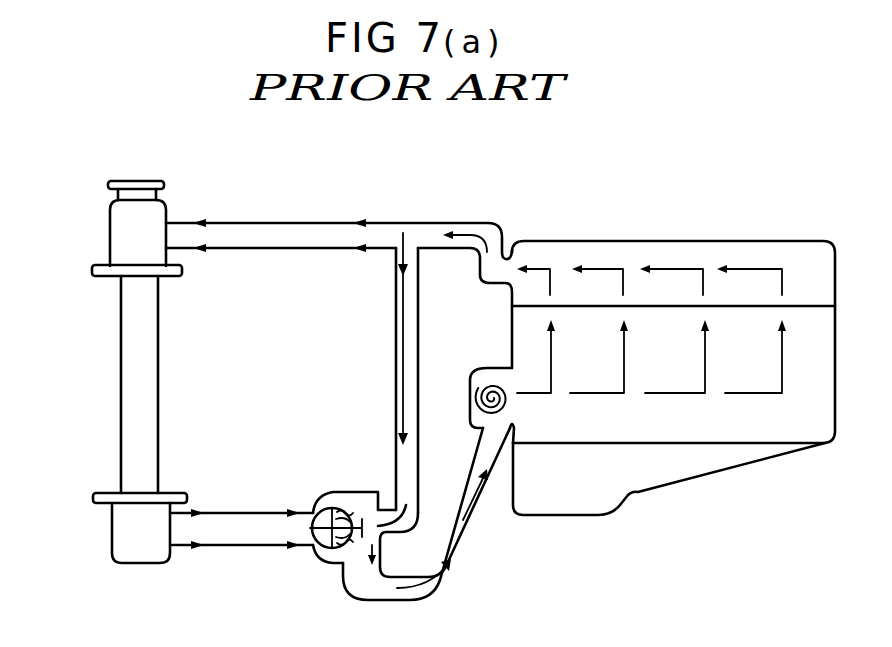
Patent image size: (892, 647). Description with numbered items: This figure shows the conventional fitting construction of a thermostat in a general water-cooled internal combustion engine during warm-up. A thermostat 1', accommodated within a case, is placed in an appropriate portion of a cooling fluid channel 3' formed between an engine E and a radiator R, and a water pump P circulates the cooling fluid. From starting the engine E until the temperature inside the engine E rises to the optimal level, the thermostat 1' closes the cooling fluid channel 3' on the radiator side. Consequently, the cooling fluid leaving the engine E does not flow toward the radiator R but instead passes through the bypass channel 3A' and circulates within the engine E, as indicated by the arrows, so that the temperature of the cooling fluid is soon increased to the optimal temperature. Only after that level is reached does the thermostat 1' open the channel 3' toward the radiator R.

The radiator R is at (110, 228).
The cooling fluid channel 3' is at (339, 373).
The bypass channel 3A' is at (411, 405).
The thermostat 1' is at (394, 533).
The water pump P is at (484, 376).
The engine E is at (674, 241).